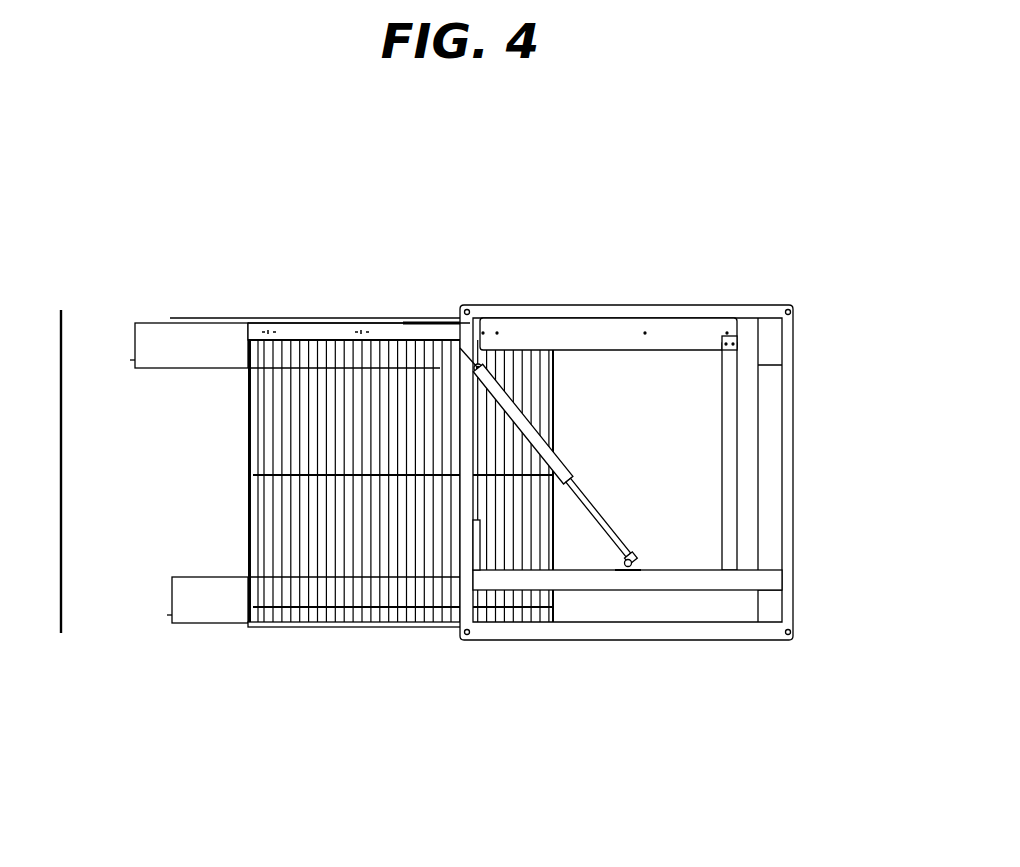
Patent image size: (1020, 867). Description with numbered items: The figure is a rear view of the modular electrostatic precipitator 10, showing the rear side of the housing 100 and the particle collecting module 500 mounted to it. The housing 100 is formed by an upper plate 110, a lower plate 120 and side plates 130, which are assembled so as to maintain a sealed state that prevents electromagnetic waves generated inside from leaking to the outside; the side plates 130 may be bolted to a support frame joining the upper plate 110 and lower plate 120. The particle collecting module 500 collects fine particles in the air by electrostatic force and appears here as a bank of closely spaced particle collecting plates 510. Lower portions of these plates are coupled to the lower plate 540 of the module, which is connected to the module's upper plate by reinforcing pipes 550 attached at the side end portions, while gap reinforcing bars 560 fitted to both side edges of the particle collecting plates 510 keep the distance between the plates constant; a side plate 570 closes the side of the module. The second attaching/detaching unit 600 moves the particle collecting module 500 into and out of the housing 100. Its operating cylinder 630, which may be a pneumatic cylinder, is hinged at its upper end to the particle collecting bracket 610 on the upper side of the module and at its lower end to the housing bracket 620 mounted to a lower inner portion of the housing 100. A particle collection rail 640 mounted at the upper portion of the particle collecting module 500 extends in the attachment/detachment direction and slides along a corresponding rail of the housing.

The modular electrostatic precipitator 10 is at (531, 202).
The housing 100 is at (861, 390).
The upper plate 110 is at (793, 308).
The lower plate 120 is at (793, 640).
The side plates 130 is at (61, 350).
The particle collecting module 500 is at (187, 702).
The particle collecting plate 510 is at (403, 560).
The lower plate 540 is at (432, 625).
The reinforcing pipe 550 is at (263, 548).
The gap reinforcing bar 560 is at (325, 478).
The side plate 570 is at (248, 532).
The second attaching/detaching unit 600 is at (267, 248).
The particle collecting bracket 610 is at (436, 323).
The housing bracket 620 is at (668, 570).
The operating cylinder 630 is at (470, 397).
The particle collection rail 640 is at (312, 323).